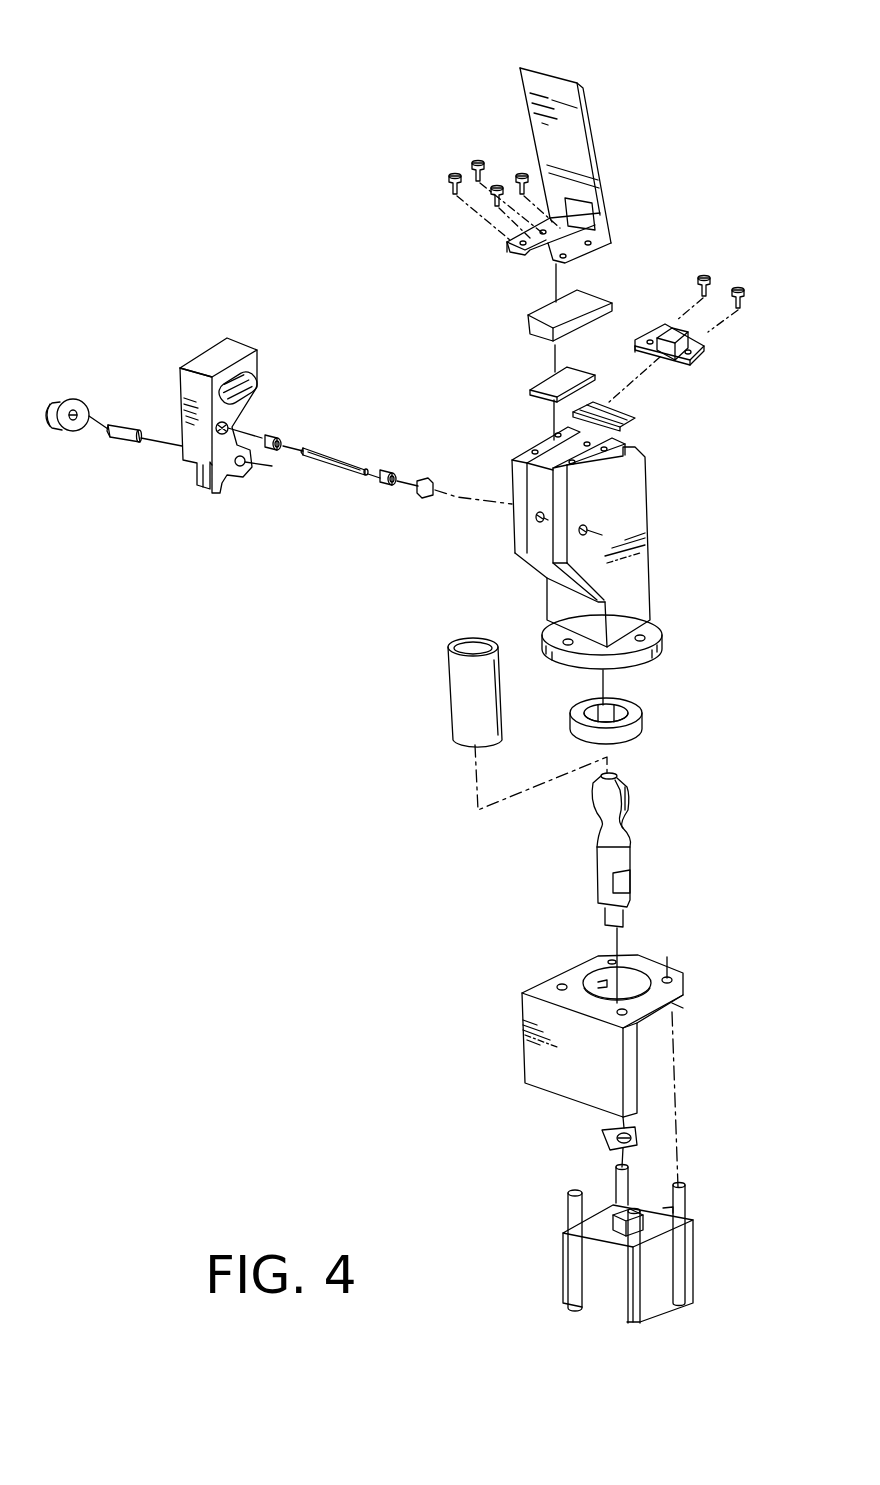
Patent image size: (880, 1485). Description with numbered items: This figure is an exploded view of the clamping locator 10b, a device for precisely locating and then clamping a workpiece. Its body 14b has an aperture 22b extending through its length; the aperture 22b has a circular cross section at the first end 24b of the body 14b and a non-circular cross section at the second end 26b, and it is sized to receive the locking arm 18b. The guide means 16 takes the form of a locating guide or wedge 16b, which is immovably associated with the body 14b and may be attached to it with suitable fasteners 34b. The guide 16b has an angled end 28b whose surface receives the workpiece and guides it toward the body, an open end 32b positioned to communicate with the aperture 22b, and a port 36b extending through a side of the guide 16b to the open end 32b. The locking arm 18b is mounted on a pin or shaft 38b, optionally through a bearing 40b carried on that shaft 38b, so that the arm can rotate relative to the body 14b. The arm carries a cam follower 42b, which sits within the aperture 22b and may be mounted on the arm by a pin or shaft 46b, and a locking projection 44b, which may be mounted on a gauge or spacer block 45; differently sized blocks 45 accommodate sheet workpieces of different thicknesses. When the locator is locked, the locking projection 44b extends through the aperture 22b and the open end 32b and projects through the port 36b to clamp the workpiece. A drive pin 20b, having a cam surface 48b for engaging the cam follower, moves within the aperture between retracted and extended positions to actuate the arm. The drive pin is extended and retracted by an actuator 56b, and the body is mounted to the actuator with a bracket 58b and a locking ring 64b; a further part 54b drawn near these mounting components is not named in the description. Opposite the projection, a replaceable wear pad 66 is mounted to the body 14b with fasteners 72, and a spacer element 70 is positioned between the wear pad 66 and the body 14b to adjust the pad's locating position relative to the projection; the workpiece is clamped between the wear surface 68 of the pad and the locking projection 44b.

The clamping locator 10b is at (232, 236).
The guide means 16 is at (643, 55).
The angled end 28b is at (595, 118).
The locating guide or wedge 16b is at (580, 140).
The port 36b is at (572, 209).
The open end 32b is at (520, 255).
The fasteners 34b is at (520, 173).
The locking projection 44b is at (526, 318).
The gauge or spacer block 45 is at (548, 380).
The replaceable wear pad 66 is at (693, 360).
The wear surface 68 is at (673, 322).
The fasteners 72 is at (740, 286).
The spacer element 70 is at (633, 420).
The body 14b is at (640, 573).
The aperture 22b is at (533, 468).
The second end 26b is at (645, 478).
The first end 24b is at (718, 600).
The sleeve 54b is at (457, 688).
The locking ring 64b is at (577, 720).
The pin 48b is at (618, 777).
The plunger 20b is at (593, 843).
The housing 58b is at (572, 972).
The base 56b is at (563, 1233).
The cam follower 42b is at (68, 398).
The pin or shaft 46b is at (128, 443).
The locking arm 18b is at (203, 348).
The bearing 40b is at (280, 453).
The pin or shaft 38b is at (328, 448).